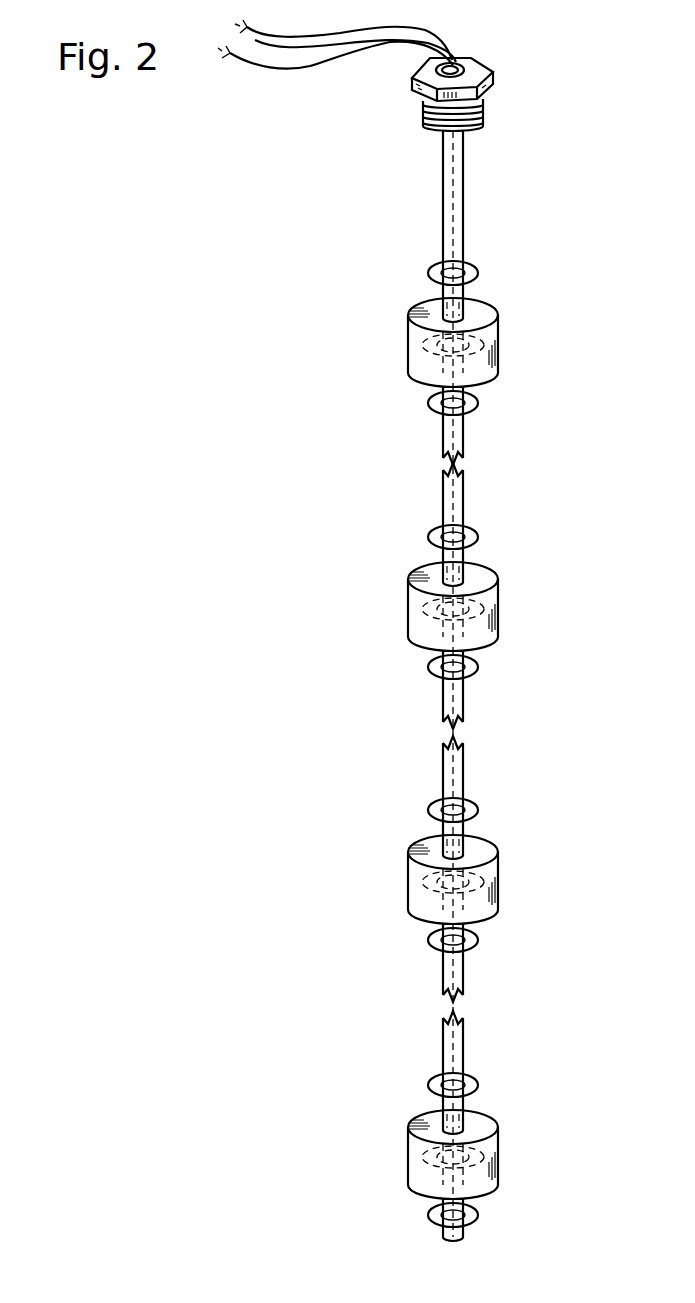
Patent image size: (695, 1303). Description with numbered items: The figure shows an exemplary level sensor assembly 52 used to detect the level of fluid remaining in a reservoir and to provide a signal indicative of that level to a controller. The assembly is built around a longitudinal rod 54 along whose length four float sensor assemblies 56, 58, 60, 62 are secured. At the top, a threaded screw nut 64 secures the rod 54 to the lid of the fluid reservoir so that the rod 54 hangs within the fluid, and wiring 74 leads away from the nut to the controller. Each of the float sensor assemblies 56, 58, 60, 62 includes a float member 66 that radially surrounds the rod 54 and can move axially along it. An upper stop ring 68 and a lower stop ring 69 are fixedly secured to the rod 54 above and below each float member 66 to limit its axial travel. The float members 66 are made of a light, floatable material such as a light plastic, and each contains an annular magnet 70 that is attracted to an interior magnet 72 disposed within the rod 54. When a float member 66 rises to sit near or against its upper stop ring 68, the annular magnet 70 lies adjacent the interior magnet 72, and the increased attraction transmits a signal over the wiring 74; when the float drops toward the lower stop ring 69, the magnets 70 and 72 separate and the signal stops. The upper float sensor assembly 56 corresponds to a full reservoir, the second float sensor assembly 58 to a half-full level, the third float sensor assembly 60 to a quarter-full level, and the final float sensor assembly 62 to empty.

The level sensor assembly 52 is at (203, 263).
The longitudinal rod 54 is at (443, 205).
The upper float sensor assembly 56 is at (393, 301).
The second float sensor assembly 58 is at (393, 565).
The third float sensor assembly 60 is at (393, 838).
The final float sensor assembly 62 is at (393, 1113).
The threaded screw nut 64 is at (488, 62).
The float member 66 is at (407, 337).
The upper stop ring 68 is at (475, 272).
The lower stop ring 69 is at (477, 401).
The annular magnet 70 is at (485, 348).
The interior magnet 72 is at (463, 305).
The wiring 74 is at (290, 46).